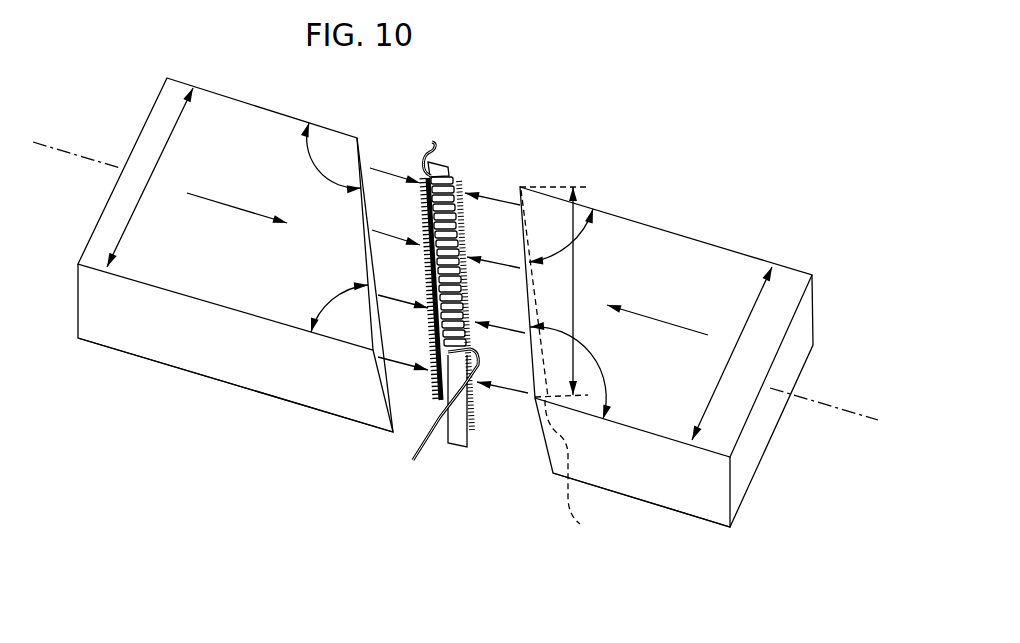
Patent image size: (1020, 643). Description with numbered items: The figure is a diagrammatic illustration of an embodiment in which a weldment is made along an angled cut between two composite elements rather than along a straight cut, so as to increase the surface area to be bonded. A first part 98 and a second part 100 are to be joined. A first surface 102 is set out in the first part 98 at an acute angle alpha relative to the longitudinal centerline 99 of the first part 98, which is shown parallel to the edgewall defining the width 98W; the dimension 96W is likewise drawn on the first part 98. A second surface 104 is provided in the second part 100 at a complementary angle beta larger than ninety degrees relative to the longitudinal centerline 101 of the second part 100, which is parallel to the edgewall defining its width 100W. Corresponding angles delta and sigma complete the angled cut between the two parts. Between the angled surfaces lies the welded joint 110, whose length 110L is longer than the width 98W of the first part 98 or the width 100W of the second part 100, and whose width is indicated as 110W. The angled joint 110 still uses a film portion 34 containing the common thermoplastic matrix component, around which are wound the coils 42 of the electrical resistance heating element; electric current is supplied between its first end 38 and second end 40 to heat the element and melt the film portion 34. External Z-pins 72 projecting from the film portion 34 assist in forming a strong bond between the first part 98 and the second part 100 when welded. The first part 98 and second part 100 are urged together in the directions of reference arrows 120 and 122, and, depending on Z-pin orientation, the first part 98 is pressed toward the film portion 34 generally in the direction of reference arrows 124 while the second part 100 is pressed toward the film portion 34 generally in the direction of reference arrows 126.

The film portion 34 is at (457, 446).
The first end 38 is at (427, 168).
The second end 40 is at (412, 447).
The coils 42 is at (447, 178).
The external Z-pins 72 is at (453, 190).
The width of block 96W is at (178, 335).
The first part 98 is at (240, 101).
The width of first part 98W is at (165, 147).
The longitudinal centerline of first part 99 is at (118, 168).
The second part 100 is at (660, 228).
The width of second part 100W is at (702, 492).
The longitudinal centerline of second part 101 is at (850, 413).
The first surface 102 is at (373, 263).
The second surface 104 is at (580, 524).
The welded joint 110 is at (445, 300).
The length of welded joint 110L is at (575, 289).
The width of coil stack 110W is at (757, 297).
The reference arrow 120 is at (225, 204).
The reference arrow 122 is at (682, 326).
The reference arrows 124 is at (371, 170).
The reference arrows 126 is at (507, 205).